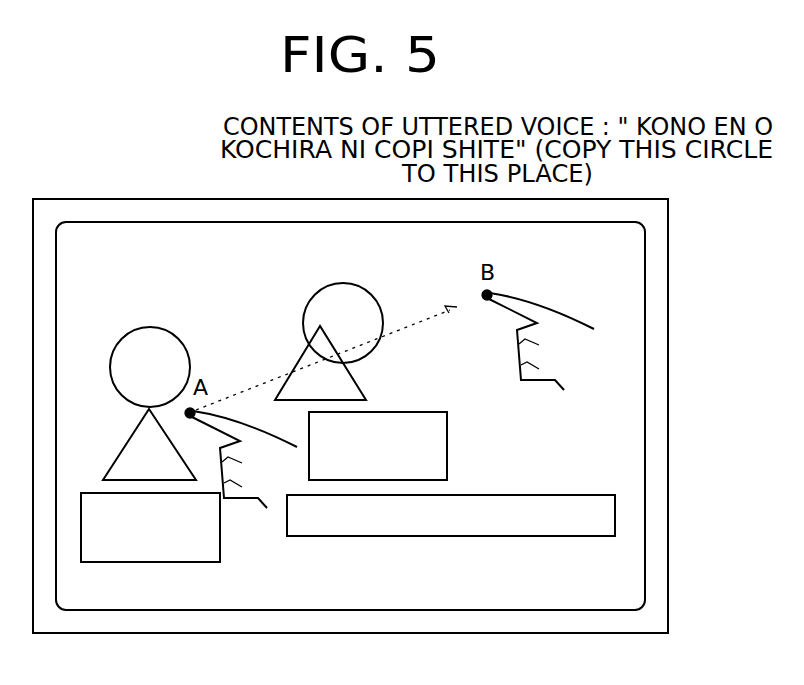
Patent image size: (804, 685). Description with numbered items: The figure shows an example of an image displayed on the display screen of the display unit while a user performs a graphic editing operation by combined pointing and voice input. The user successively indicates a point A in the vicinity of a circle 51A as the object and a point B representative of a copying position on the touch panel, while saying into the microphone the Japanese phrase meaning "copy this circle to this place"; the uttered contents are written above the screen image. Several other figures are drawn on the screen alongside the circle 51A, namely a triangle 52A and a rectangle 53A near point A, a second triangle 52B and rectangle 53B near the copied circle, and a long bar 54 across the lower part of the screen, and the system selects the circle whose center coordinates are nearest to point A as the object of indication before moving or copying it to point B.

The circle 51A is at (119, 338).
The triangle object (source) 52A is at (112, 470).
The rectangle object (source) 53A is at (133, 562).
The triangle object (destination) 52B is at (355, 375).
The rectangle object (destination) 53B is at (448, 443).
The bar object 54 is at (523, 494).